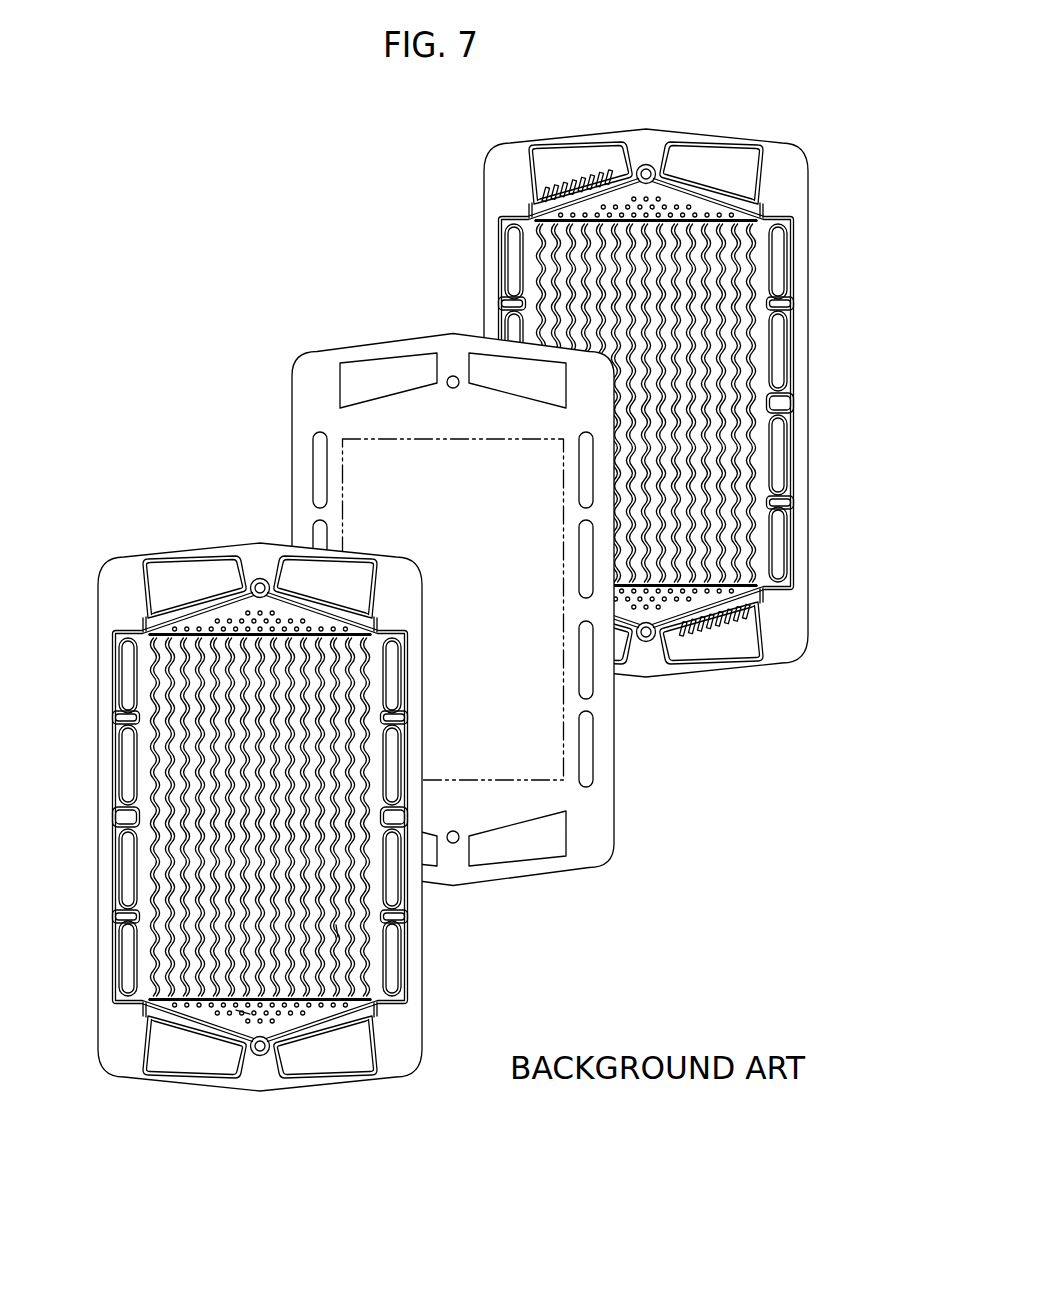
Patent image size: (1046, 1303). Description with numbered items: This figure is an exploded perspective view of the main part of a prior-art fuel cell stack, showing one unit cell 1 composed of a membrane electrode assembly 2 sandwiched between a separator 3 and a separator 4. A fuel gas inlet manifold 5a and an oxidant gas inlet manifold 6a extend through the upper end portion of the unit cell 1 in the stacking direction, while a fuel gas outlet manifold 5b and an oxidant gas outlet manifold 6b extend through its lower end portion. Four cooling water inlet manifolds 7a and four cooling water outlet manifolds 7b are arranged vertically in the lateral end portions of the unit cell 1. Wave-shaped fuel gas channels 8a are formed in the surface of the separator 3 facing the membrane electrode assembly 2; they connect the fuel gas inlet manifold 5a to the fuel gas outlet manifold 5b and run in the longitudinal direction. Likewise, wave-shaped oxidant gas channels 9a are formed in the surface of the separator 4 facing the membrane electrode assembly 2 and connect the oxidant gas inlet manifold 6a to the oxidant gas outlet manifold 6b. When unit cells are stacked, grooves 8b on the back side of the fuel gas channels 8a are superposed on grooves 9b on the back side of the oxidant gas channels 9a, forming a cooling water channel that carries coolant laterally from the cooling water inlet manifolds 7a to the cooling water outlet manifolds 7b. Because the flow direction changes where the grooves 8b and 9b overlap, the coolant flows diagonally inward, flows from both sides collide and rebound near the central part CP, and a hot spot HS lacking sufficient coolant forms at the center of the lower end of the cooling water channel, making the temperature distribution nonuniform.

The unit cell 1 is at (370, 90).
The membrane electrode assembly 2 is at (306, 351).
The separator 3 is at (498, 144).
The separator 4 is at (113, 553).
The fuel gas inlet manifold 5a is at (187, 578).
The fuel gas outlet manifold 5b is at (335, 1053).
The oxidant gas inlet manifold 6a is at (352, 578).
The oxidant gas outlet manifold 6b is at (187, 1053).
The cooling water inlet manifold 7a is at (124, 678).
The cooling water outlet manifold 7b is at (397, 678).
The fuel gas channel 8a is at (552, 288).
The groove 8b is at (547, 256).
The oxidant gas channel 9a is at (165, 891).
The groove 9b is at (160, 866).
The central part CP is at (338, 931).
The hot spot HS is at (243, 1012).